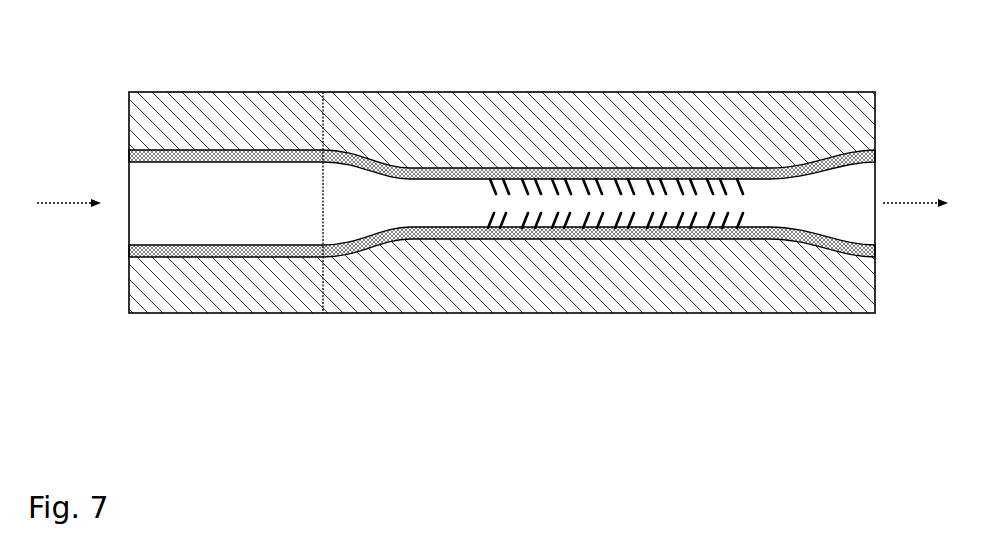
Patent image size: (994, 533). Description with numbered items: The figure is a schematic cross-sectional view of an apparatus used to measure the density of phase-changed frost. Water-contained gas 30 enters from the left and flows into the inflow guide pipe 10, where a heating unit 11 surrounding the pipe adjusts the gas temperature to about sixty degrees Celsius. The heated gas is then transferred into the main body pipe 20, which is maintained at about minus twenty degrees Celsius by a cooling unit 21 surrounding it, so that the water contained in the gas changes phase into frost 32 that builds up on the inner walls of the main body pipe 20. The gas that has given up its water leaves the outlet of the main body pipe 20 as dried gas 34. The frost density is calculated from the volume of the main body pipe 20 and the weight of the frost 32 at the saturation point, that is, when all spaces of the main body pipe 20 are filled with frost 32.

The inflow guide pipe 10 is at (274, 84).
The main body pipe 20 is at (592, 84).
The heating unit 11 is at (210, 313).
The cooling unit 21 is at (578, 313).
The water-contained gas 30 is at (57, 203).
The frost 32 is at (523, 221).
The dried gas 34 is at (912, 203).